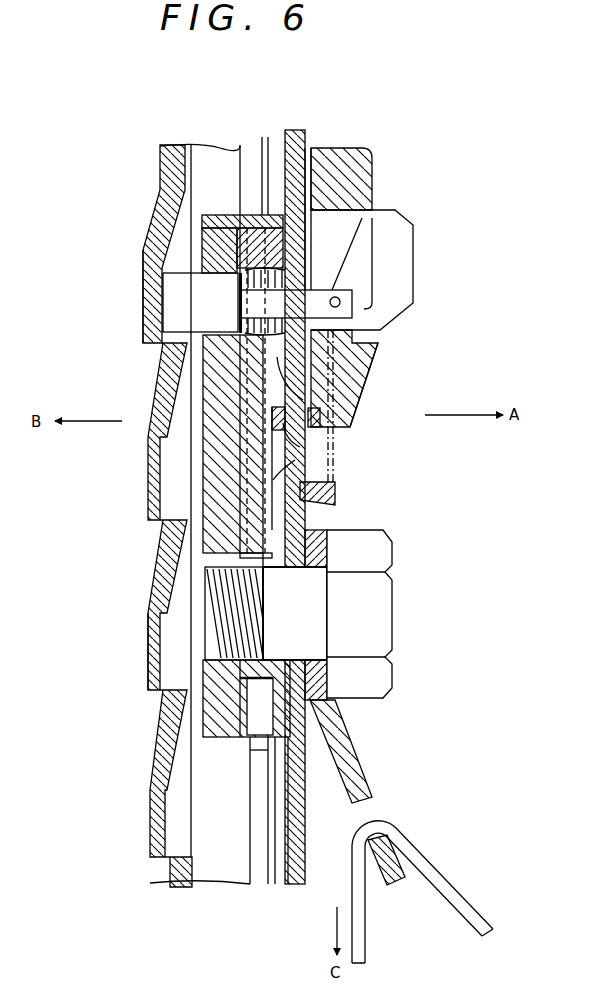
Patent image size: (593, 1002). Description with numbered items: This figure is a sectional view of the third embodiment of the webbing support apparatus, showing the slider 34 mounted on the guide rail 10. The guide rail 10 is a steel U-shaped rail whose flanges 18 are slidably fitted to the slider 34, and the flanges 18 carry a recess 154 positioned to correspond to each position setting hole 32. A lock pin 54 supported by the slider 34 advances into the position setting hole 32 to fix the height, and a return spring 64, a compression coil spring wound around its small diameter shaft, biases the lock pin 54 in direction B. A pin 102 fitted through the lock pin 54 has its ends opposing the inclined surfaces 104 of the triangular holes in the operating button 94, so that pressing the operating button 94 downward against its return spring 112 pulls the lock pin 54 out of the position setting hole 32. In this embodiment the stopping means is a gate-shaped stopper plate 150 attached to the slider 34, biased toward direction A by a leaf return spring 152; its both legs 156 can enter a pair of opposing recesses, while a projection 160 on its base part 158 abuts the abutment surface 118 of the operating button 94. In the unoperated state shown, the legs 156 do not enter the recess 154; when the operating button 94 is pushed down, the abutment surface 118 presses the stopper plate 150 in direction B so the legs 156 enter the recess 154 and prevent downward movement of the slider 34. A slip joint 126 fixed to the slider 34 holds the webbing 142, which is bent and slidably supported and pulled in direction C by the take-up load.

The guide rail 10 is at (160, 150).
The position setting hole 32 is at (170, 234).
The slider 34 is at (220, 204).
The flanges 18 is at (258, 138).
The operating button 94 is at (408, 210).
The return spring 64 is at (290, 252).
The inclined surfaces 104 is at (300, 262).
The pin 102 is at (345, 290).
The lock pin 54 is at (183, 286).
The legs 156 is at (237, 377).
The stopper plate 150 is at (215, 461).
The abutment surface 118 is at (322, 388).
The projection 160 is at (350, 405).
The base part 158 is at (320, 425).
The return spring 152 is at (333, 460).
The return spring 112 is at (336, 490).
The slip joint 126 is at (358, 776).
The recess 154 is at (255, 826).
The webbing 142 is at (424, 846).